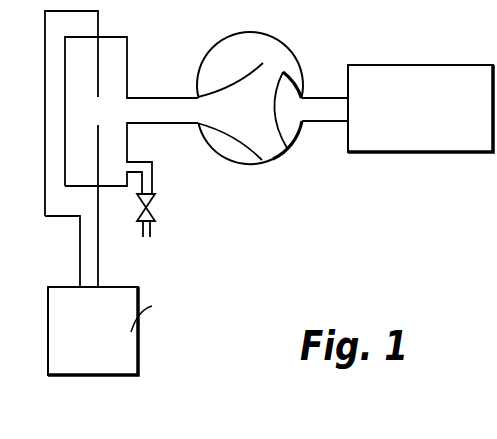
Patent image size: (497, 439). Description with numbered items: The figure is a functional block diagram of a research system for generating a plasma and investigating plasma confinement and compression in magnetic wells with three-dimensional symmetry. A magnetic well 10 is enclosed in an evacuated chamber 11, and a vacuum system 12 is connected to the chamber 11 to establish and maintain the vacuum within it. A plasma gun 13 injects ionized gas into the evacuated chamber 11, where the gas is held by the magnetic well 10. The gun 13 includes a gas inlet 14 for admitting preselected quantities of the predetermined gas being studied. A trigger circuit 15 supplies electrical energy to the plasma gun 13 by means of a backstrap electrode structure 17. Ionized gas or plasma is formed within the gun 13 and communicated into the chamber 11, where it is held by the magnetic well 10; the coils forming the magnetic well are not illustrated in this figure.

The magnetic well 10 is at (236, 142).
The evacuated chamber 11 is at (295, 144).
The vacuum system 12 is at (407, 63).
The plasma gun 13 is at (130, 35).
The gas inlet 14 is at (157, 220).
The trigger circuit 15 is at (138, 288).
The backstrap electrode structure 17 is at (44, 202).